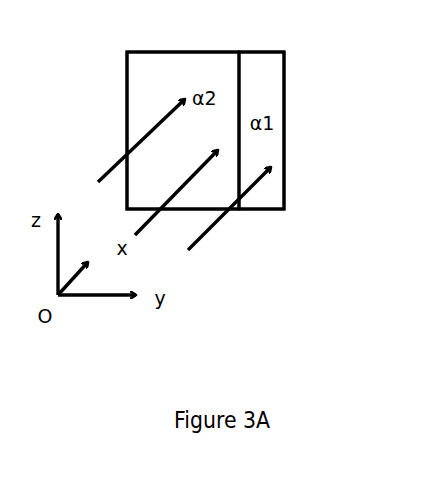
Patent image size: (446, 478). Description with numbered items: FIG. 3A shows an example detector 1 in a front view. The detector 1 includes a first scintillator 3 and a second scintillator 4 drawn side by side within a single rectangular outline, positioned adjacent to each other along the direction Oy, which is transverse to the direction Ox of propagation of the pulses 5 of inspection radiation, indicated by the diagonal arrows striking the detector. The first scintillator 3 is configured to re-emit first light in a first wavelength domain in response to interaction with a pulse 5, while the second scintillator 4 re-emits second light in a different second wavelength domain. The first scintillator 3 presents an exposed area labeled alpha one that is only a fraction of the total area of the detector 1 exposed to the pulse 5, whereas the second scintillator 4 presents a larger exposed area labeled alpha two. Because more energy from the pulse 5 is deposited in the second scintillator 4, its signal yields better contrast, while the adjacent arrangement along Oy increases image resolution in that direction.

The detector 1 is at (292, 220).
The first scintillator 3 is at (270, 77).
The second scintillator 4 is at (162, 83).
The pulse of inspection radiation 5 is at (229, 242).